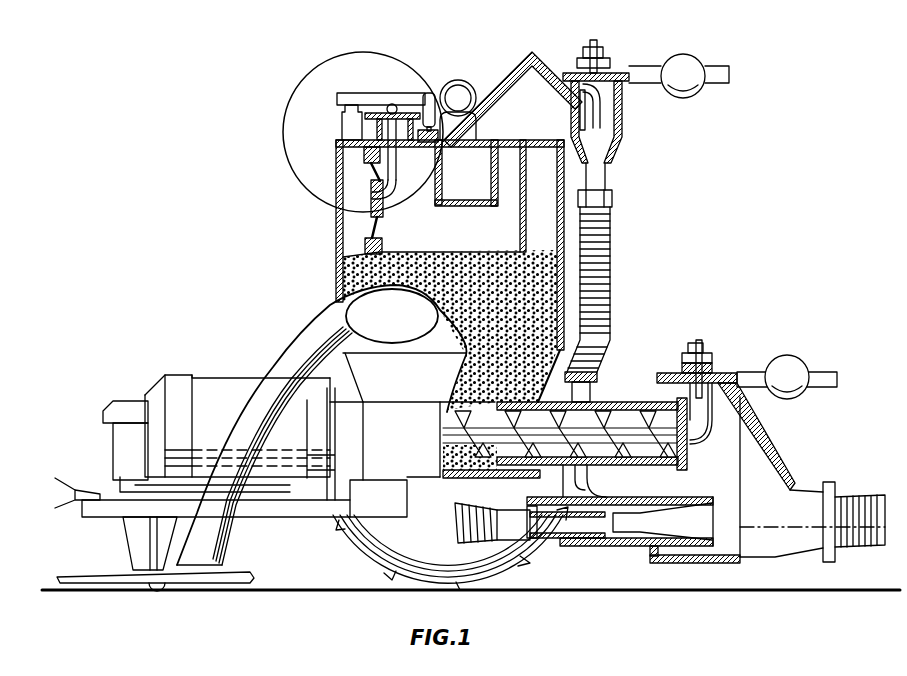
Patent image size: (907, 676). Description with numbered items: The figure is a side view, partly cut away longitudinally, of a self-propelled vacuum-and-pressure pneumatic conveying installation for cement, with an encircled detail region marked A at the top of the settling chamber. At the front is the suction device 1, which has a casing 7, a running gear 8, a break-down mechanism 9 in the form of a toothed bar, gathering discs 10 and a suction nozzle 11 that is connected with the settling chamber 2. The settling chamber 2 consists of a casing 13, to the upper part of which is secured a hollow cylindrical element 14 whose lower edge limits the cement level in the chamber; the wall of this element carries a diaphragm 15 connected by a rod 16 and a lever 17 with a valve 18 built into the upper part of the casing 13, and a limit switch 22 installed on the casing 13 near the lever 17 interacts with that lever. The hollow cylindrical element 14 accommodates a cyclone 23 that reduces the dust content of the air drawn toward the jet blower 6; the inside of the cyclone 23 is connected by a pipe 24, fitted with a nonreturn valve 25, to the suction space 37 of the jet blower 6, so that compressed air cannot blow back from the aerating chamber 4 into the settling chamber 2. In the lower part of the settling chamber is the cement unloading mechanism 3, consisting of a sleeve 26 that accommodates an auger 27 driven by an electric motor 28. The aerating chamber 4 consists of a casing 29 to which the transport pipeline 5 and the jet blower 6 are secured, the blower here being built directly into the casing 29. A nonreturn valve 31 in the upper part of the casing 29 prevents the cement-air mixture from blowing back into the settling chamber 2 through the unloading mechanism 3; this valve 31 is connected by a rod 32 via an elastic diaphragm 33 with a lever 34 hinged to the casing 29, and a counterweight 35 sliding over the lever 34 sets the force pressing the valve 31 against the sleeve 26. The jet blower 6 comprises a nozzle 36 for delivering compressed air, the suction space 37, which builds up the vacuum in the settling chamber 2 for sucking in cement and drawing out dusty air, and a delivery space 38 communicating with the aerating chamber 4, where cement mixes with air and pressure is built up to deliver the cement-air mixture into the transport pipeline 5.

The suction device 1 is at (128, 453).
The settling chamber 2 is at (385, 460).
The cement unloading mechanism 3 is at (350, 458).
The aerating chamber 4 is at (760, 470).
The transport pipeline 5 is at (862, 510).
The jet blower 6 is at (667, 503).
The casing 7 is at (98, 512).
The running gear 8 is at (410, 557).
The break-down mechanism 9 is at (56, 499).
The gathering discs 10 is at (70, 577).
The suction nozzle 11 is at (290, 362).
The casing 13 is at (338, 226).
The hollow cylindrical element 14 is at (525, 225).
The diaphragm 15 is at (368, 173).
The rod 16 is at (396, 190).
The lever 17 is at (373, 100).
The valve 18 is at (430, 146).
The limit switch 22 is at (347, 132).
The cyclone 23 is at (497, 196).
The pipe 24 is at (510, 86).
The nonreturn valve 25 is at (582, 123).
The sleeve 26 is at (597, 401).
The auger 27 is at (630, 410).
The electric motor 28 is at (234, 397).
The casing 29 is at (747, 408).
The nonreturn valve 31 is at (668, 375).
The rod 32 is at (703, 405).
The elastic diaphragm 33 is at (733, 375).
The lever 34 is at (825, 375).
The counterweight 35 is at (793, 370).
The nozzle 36 is at (572, 548).
The suction space 37 is at (603, 548).
The delivery space 38 is at (693, 520).
The detail A is at (396, 57).